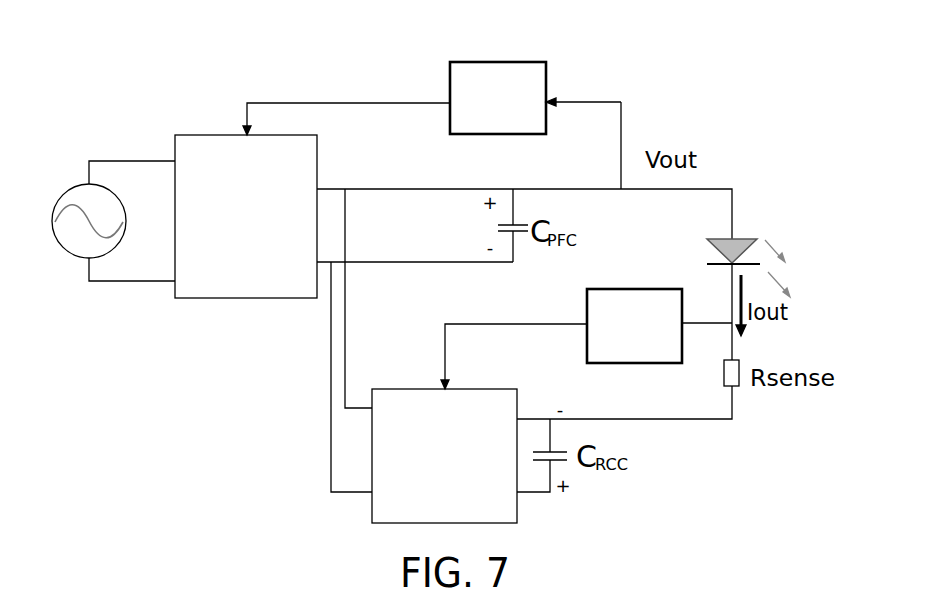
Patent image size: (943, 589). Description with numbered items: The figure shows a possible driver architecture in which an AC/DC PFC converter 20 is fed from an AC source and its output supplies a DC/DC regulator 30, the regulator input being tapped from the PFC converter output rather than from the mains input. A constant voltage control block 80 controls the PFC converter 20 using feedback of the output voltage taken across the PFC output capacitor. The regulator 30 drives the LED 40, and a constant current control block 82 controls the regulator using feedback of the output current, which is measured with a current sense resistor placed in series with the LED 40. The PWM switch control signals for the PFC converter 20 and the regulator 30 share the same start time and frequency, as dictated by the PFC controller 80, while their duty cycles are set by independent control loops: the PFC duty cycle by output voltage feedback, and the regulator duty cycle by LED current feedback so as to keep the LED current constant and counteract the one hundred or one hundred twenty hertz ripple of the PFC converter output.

The AC/DC PFC converter 20 is at (210, 133).
The DC/DC regulator 30 is at (413, 388).
The LED 40 is at (752, 238).
The constant voltage control block 80 is at (547, 83).
The constant current control block 82 is at (633, 288).